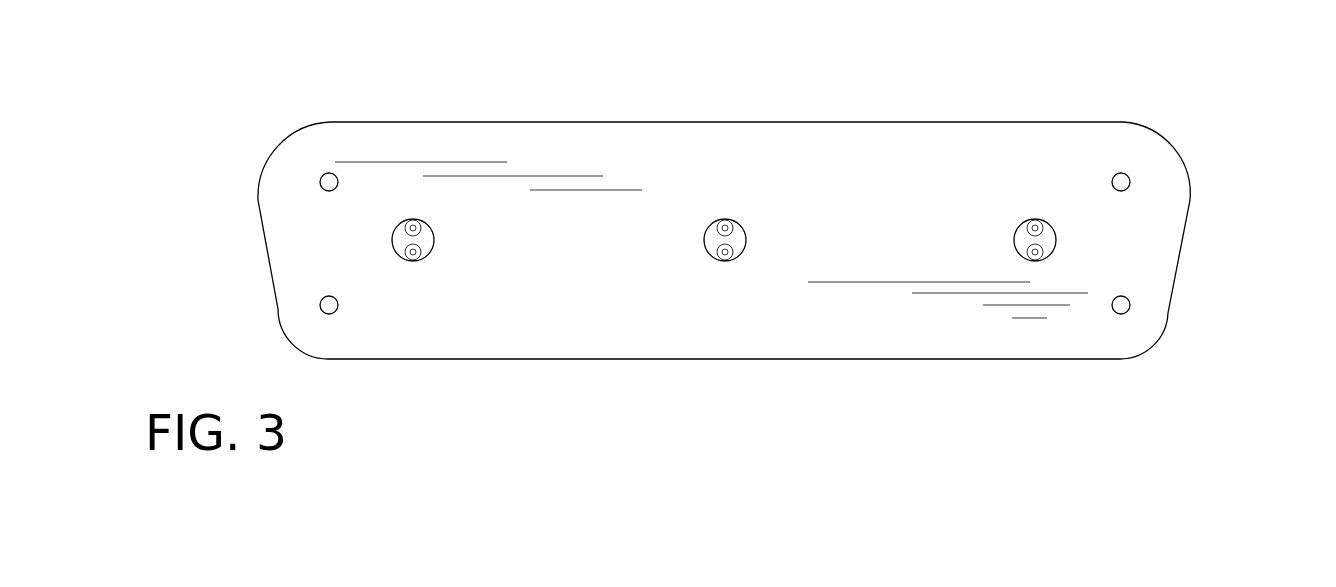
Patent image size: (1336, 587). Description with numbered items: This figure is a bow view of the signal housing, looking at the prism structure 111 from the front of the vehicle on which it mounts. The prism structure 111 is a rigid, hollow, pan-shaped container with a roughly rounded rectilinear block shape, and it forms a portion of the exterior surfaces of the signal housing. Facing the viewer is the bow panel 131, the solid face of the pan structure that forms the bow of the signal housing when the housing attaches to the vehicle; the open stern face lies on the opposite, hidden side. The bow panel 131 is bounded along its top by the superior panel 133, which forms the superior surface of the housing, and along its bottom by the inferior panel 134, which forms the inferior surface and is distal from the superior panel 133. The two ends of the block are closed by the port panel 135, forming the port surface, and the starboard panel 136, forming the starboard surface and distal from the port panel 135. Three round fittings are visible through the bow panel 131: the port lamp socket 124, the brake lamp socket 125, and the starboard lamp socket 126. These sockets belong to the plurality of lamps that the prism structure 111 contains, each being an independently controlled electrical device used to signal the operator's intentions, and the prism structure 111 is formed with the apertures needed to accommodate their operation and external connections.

The prism structure 111 is at (167, 120).
The port lamp socket 124 is at (1054, 233).
The brake lamp socket 125 is at (744, 235).
The starboard lamp socket 126 is at (430, 238).
The bow panel 131 is at (765, 318).
The superior panel 133 is at (710, 112).
The inferior panel 134 is at (555, 358).
The port panel 135 is at (1187, 225).
The starboard panel 136 is at (263, 220).